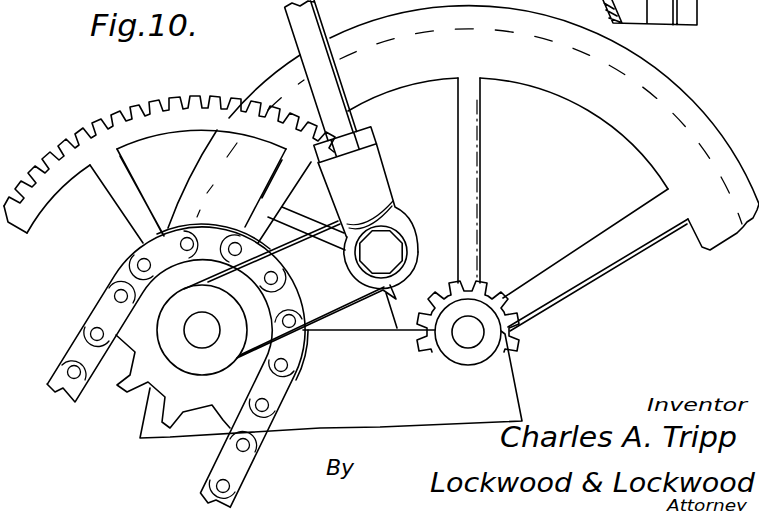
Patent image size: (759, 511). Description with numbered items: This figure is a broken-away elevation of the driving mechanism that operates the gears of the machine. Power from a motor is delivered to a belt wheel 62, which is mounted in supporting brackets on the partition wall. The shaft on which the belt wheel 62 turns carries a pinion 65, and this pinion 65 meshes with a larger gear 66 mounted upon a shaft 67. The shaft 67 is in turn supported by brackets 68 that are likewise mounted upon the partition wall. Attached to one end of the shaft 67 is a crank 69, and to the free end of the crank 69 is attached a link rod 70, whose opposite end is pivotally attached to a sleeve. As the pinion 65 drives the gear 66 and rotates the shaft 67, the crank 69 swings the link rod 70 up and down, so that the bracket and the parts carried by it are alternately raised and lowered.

The belt wheel 62 is at (690, 110).
The pinion 65 is at (498, 296).
The gear 66 is at (98, 135).
The shaft 67 is at (208, 330).
The brackets 68 is at (492, 388).
The crank 69 is at (290, 289).
The link rod 70 is at (296, 31).